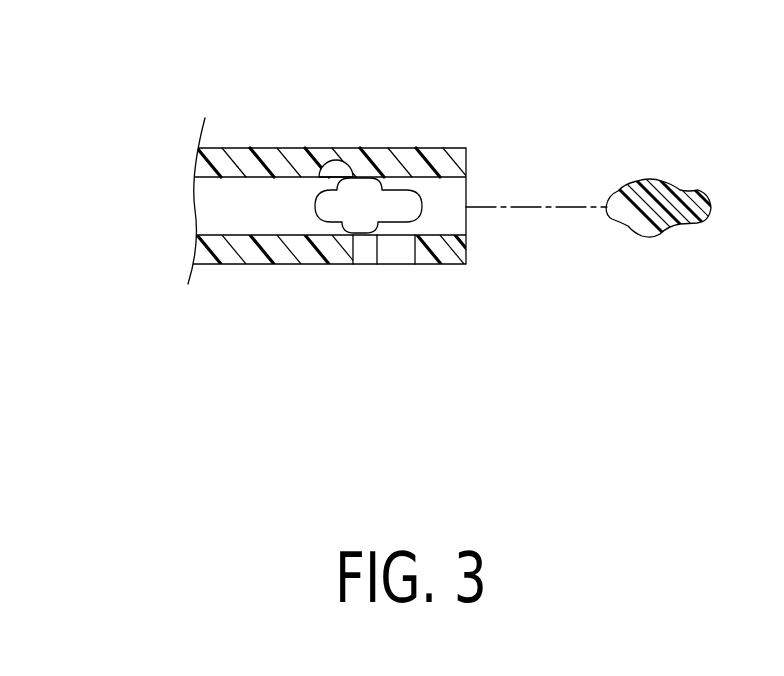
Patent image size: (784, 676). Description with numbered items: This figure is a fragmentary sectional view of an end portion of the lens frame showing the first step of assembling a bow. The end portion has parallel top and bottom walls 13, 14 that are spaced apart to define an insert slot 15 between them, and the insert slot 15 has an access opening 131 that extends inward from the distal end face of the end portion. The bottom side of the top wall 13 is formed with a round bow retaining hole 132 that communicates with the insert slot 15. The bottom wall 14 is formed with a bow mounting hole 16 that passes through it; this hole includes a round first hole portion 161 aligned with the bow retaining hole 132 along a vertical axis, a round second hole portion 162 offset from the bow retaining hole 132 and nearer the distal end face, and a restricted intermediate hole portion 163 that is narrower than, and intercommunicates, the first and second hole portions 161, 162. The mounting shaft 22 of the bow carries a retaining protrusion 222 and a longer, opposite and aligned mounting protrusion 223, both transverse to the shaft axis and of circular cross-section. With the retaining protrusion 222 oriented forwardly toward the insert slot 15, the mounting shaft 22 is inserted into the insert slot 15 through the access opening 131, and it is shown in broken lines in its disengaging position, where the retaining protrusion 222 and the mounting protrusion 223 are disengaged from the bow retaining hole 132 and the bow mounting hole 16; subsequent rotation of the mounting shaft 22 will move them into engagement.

The top wall 13 is at (382, 156).
The access opening 131 is at (468, 188).
The bow retaining hole 132 is at (366, 197).
The bottom wall 14 is at (427, 265).
The insert slot 15 is at (260, 198).
The bow mounting hole 16 is at (337, 265).
The first hole portion 161 is at (333, 247).
The second hole portion 162 is at (393, 265).
The intermediate hole portion 163 is at (367, 265).
The mounting shaft 22 is at (357, 178).
The retaining protrusion 222 is at (613, 197).
The mounting protrusion 223 is at (702, 223).